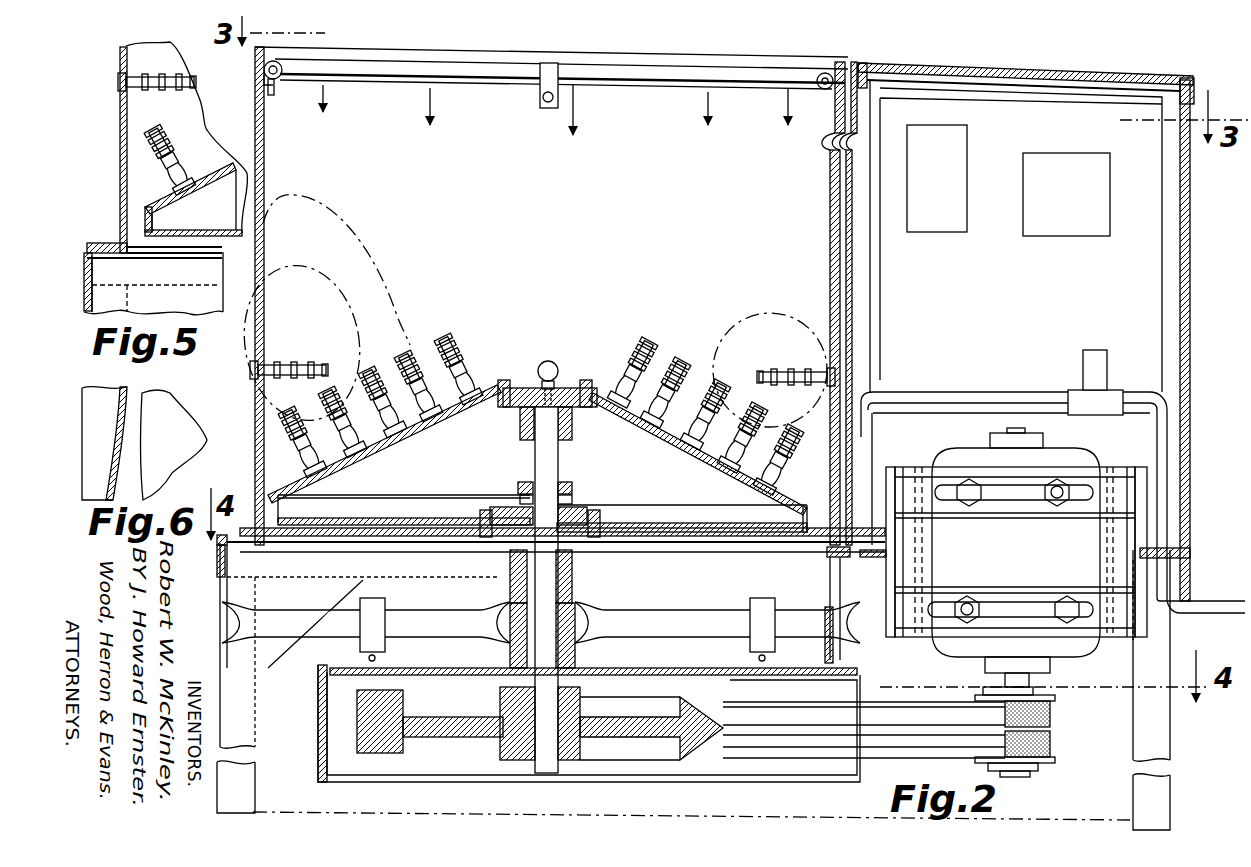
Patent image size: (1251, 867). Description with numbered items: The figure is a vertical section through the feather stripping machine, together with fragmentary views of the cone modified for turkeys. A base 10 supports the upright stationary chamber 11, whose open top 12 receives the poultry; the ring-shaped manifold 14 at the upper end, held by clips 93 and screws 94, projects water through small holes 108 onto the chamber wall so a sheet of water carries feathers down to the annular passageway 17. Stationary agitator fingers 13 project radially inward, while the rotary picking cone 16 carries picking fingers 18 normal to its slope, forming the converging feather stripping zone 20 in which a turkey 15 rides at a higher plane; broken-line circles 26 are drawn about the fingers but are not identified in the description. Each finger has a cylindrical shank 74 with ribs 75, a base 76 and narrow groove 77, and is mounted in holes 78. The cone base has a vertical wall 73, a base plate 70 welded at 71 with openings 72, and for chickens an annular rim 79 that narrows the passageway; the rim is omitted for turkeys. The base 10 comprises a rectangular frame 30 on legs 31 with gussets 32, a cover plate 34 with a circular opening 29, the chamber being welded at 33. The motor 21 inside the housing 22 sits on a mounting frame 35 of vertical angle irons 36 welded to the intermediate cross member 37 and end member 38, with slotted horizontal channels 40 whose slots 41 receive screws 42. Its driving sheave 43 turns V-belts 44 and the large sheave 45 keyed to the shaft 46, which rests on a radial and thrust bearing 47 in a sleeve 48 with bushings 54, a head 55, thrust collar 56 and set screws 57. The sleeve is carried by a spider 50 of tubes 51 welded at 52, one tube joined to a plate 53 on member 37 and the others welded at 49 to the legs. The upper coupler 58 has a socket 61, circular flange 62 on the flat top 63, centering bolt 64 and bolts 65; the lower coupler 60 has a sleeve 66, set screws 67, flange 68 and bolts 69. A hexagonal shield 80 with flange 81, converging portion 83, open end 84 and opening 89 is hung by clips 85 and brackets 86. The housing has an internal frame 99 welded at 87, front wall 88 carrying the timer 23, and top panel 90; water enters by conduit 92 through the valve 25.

In FIG. 2, the base 10 is at (258, 790).
In FIG. 5, the stationary chamber 11 is at (118, 120).
In FIG. 6, the stationary chamber 11 is at (112, 452).
In FIG. 2, the stationary chamber 11 is at (268, 188).
In FIG. 2, the open top 12 is at (658, 76).
In FIG. 5, the stationary agitator fingers 13 is at (150, 78).
In FIG. 2, the stationary agitator fingers 13 is at (280, 362).
In FIG. 2, the manifold 14 is at (742, 80).
In FIG. 2, the turkey 15 is at (348, 220).
In FIG. 5, the rotary picking cone 16 is at (222, 162).
In FIG. 6, the rotary picking cone 16 is at (180, 443).
In FIG. 2, the rotary picking cone 16 is at (448, 400).
In FIG. 5, the annular passageway 17 is at (125, 216).
In FIG. 6, the annular passageway 17 is at (140, 412).
In FIG. 2, the annular passageway 17 is at (282, 538).
In FIG. 5, the picking fingers 18 is at (172, 148).
In FIG. 2, the picking fingers 18 is at (383, 378).
In FIG. 2, the feather stripping zone 20 is at (738, 360).
In FIG. 2, the motor 21 is at (970, 452).
In FIG. 2, the housing 22 is at (1191, 382).
In FIG. 2, the adjustable timer 23 is at (1098, 212).
In FIG. 2, the electrically operated valve 25 is at (1086, 362).
In FIG. 2, the spray circle 26 is at (340, 270).
In FIG. 2, the circular opening 29 is at (250, 544).
In FIG. 2, the rectangular frame 30 is at (1188, 580).
In FIG. 2, the legs 31 is at (255, 772).
In FIG. 5, the triangular gussets 32 is at (205, 305).
In FIG. 2, the triangular gussets 32 is at (262, 676).
In FIG. 2, the weld 33 is at (238, 528).
In FIG. 5, the cover plate 34 is at (88, 250).
In FIG. 6, the cover plate 34 is at (106, 390).
In FIG. 2, the mounting frame 35 is at (1160, 486).
In FIG. 2, the vertical angle irons 36 is at (883, 482).
In FIG. 2, the intermediate cross member 37 is at (848, 588).
In FIG. 2, the end member 38 is at (1190, 553).
In FIG. 2, the horizontal channels 40 is at (1090, 478).
In FIG. 2, the slots 41 is at (1005, 500).
In FIG. 2, the screws 42 is at (1065, 504).
In FIG. 2, the driving sheave 43 is at (1048, 702).
In FIG. 2, the V-belts 44 is at (796, 742).
In FIG. 2, the large sheave 45 is at (385, 755).
In FIG. 2, the shaft 46 is at (560, 460).
In FIG. 2, the combined radial and thrust bearing 47 is at (578, 680).
In FIG. 2, the sleeve 48 is at (578, 606).
In FIG. 2, the weld 49 is at (846, 655).
In FIG. 2, the spider 50 is at (458, 615).
In FIG. 2, the tubes 51 is at (318, 618).
In FIG. 2, the weld 52 is at (578, 652).
In FIG. 2, the plate 53 is at (835, 603).
In FIG. 2, the bushings 54 is at (578, 628).
In FIG. 2, the head 55 is at (578, 594).
In FIG. 2, the thrust collar 56 is at (508, 560).
In FIG. 2, the set screws 57 is at (508, 572).
In FIG. 2, the upper mounting coupler 58 is at (574, 428).
In FIG. 2, the lower mounting coupler 60 is at (574, 484).
In FIG. 2, the socket 61 is at (520, 430).
In FIG. 2, the circular flange 62 is at (498, 405).
In FIG. 2, the flat top 63 is at (526, 386).
In FIG. 2, the centering bolt 64 is at (558, 372).
In FIG. 2, the bolts 65 is at (500, 378).
In FIG. 2, the sleeve 66 is at (516, 494).
In FIG. 2, the set screws 67 is at (574, 498).
In FIG. 2, the flange 68 is at (602, 518).
In FIG. 2, the bolts 69 is at (600, 538).
In FIG. 2, the base plate 70 is at (446, 512).
In FIG. 2, the weld 71 is at (292, 555).
In FIG. 5, the openings 72 is at (242, 222).
In FIG. 2, the openings 72 is at (386, 512).
In FIG. 5, the vertical wall 73 is at (160, 218).
In FIG. 2, the vertical wall 73 is at (296, 508).
In FIG. 2, the cylindrical shank 74 is at (632, 352).
In FIG. 2, the ribs 75 is at (656, 364).
In FIG. 2, the base 76 is at (858, 380).
In FIG. 2, the narrow groove 77 is at (694, 450).
In FIG. 2, the holes 78 is at (866, 364).
In FIG. 2, the annular rim 79 is at (270, 488).
In FIG. 2, the shield 80 is at (318, 730).
In FIG. 2, the flange 81 is at (330, 680).
In FIG. 2, the converging portion 83 is at (668, 765).
In FIG. 2, the open end 84 is at (862, 772).
In FIG. 2, the attachment clips 85 is at (567, 618).
In FIG. 2, the bracket portions 86 is at (748, 660).
In FIG. 2, the weld 87 is at (1168, 538).
In FIG. 2, the front wall 88 is at (1165, 178).
In FIG. 2, the opening 89 is at (510, 676).
In FIG. 2, the top panel 90 is at (1035, 70).
In FIG. 2, the conduit 92 is at (1236, 626).
In FIG. 2, the clips 93 is at (283, 80).
In FIG. 2, the screws 94 is at (276, 96).
In FIG. 2, the internal frame 99 is at (1162, 272).
In FIG. 2, the small holes 108 is at (388, 80).